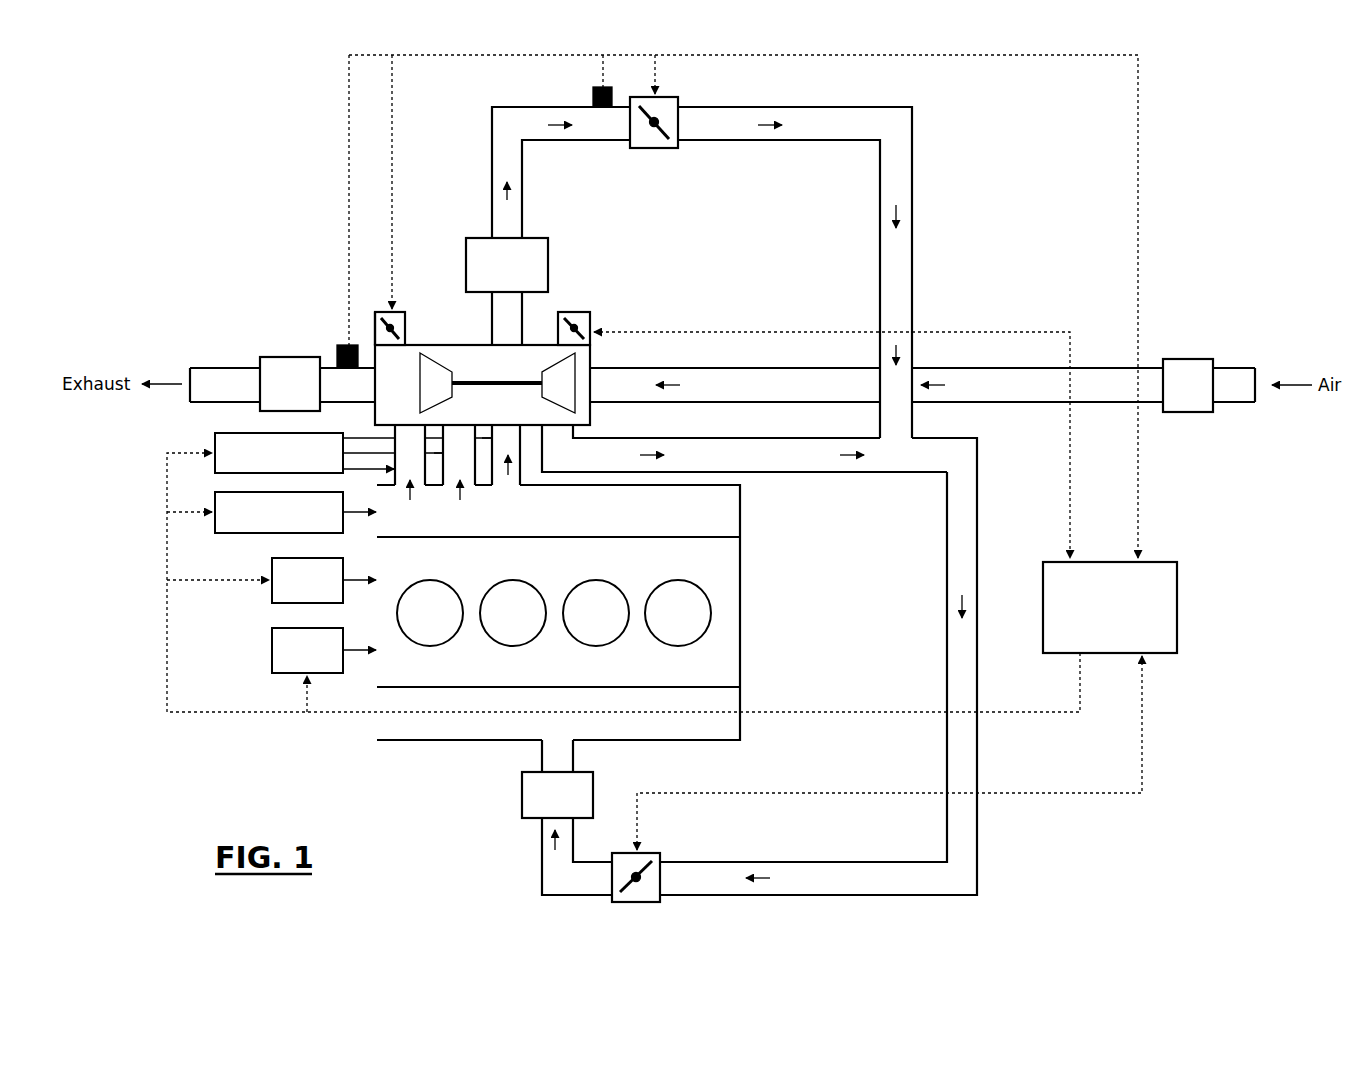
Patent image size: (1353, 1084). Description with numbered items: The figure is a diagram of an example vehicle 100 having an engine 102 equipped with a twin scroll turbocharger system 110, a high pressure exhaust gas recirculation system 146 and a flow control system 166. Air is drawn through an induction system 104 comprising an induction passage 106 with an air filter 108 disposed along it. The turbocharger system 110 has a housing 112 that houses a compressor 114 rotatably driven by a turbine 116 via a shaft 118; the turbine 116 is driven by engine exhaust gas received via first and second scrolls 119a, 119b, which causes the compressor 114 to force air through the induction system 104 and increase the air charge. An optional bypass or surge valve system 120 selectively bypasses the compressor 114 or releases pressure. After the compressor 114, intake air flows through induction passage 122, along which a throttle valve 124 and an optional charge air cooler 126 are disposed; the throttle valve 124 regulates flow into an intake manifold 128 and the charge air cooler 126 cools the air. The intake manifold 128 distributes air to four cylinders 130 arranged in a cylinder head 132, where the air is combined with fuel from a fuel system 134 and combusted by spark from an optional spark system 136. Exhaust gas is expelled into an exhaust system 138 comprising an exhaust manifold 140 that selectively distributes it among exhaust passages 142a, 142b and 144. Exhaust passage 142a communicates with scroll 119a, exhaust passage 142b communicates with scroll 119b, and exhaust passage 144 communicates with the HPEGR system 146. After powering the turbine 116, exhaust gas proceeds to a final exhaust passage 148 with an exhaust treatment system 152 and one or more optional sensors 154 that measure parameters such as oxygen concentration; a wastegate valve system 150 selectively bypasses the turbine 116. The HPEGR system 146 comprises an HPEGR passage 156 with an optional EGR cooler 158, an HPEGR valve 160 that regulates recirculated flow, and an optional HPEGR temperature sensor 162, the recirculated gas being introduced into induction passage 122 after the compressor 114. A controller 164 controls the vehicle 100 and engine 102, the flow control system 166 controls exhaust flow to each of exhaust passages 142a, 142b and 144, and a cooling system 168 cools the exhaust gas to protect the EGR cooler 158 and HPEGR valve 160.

The vehicle 100 is at (234, 94).
The engine 102 is at (1106, 856).
The induction system 104 is at (1180, 290).
The induction passage 106 is at (1233, 368).
The air filter 108 is at (1190, 412).
The twin scroll turbocharger system 110 is at (517, 342).
The housing 112 is at (418, 340).
The compressor wheel 114 is at (578, 368).
The turbine wheel 116 is at (430, 358).
The shaft 118 is at (488, 380).
The first inlet tract or scroll 119a is at (462, 420).
The second inlet tract or scroll 119b is at (410, 420).
The bypass or surge valve system 120 is at (590, 318).
The induction passage 122 is at (945, 660).
The throttle valve 124 is at (643, 903).
The charge air cooler 126 is at (522, 797).
The intake manifold 128 is at (410, 742).
The cylinders 130 is at (451, 637).
The cylinder head 132 is at (610, 638).
The fuel system 134 is at (272, 650).
The spark system 136 is at (272, 603).
The exhaust system 138 is at (207, 277).
The exhaust manifold 140 is at (620, 510).
The exhaust passage 142a is at (482, 487).
The exhaust passage 142b is at (440, 487).
The exhaust passage 144 is at (542, 468).
The HPEGR system 146 is at (932, 124).
The final exhaust passage 148 is at (203, 367).
The wastegate valve 150 is at (372, 330).
The wastegate valve system 152 is at (268, 357).
The sensors 154 is at (338, 345).
The HPEGR passage 156 is at (492, 160).
The EGR cooler 158 is at (550, 250).
The HPEGR valve 160 is at (657, 148).
The HPEGR temperature sensor 162 is at (605, 108).
The controller 164 is at (1177, 605).
The flow control system 166 is at (215, 440).
The cooling system 168 is at (215, 500).